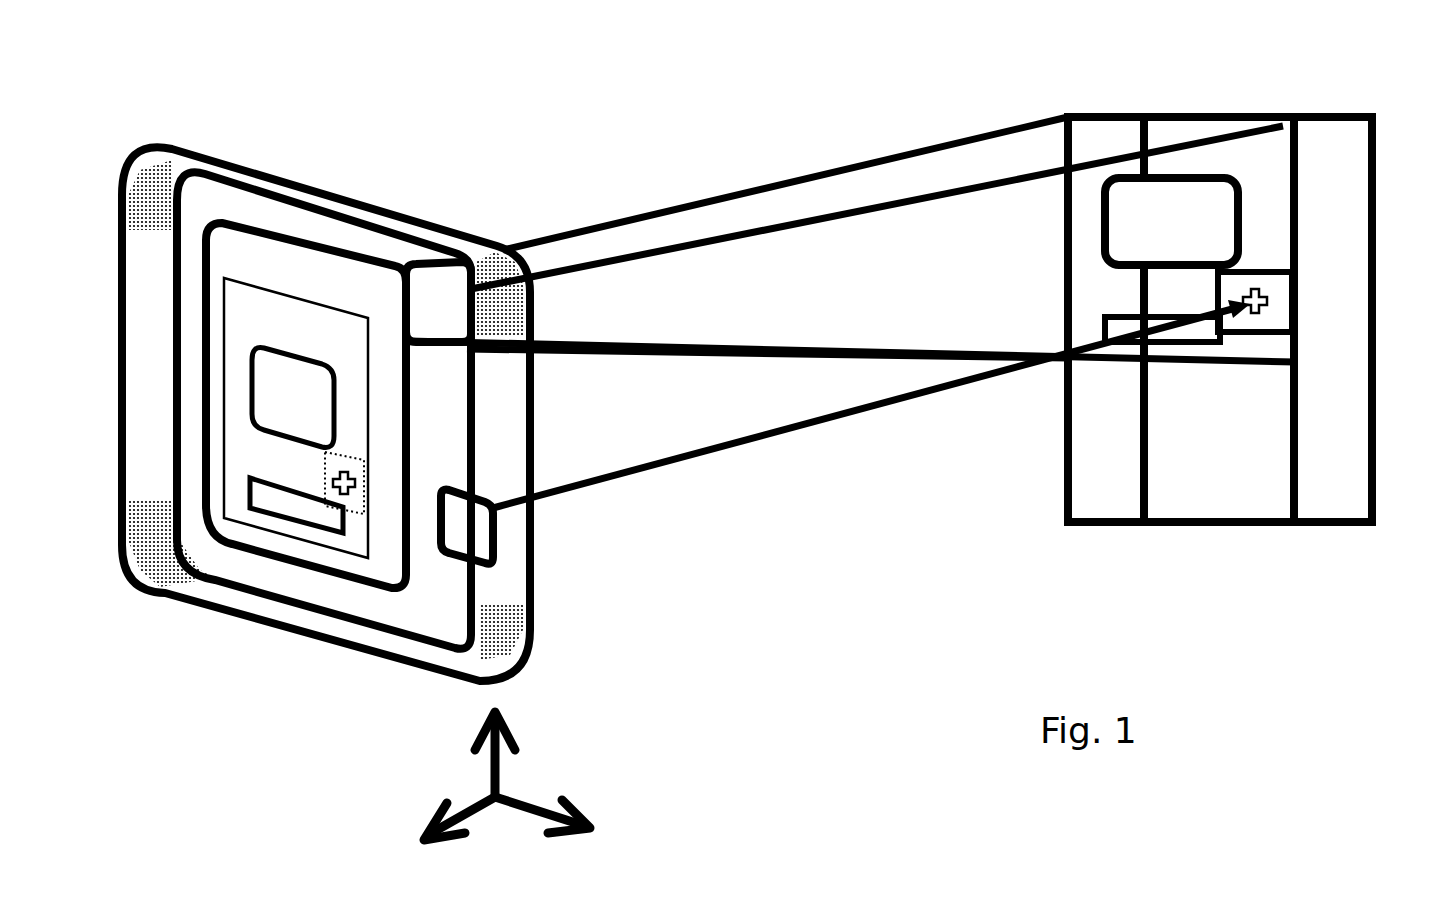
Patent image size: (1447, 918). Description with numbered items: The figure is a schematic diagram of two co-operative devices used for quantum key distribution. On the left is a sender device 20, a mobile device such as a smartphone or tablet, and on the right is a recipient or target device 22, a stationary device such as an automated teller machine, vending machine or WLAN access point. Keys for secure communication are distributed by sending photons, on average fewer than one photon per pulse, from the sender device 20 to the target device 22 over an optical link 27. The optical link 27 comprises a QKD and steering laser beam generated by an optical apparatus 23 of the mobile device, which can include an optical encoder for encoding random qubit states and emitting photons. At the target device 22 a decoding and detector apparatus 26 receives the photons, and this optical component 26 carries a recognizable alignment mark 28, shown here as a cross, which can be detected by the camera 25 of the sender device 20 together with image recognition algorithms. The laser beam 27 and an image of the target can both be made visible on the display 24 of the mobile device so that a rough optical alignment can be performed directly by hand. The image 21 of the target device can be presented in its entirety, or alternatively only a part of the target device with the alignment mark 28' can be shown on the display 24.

The sender device 20 is at (326, 222).
The image of the target device 21 is at (278, 517).
The target device 22 is at (1335, 222).
The optical apparatus 23 is at (498, 548).
The display 24 is at (330, 563).
The camera 25 is at (447, 300).
The decoding and detector apparatus 26 is at (1270, 322).
The optical link 27 is at (637, 477).
The alignment mark 28 is at (1341, 307).
The alignment mark image 28' is at (361, 585).